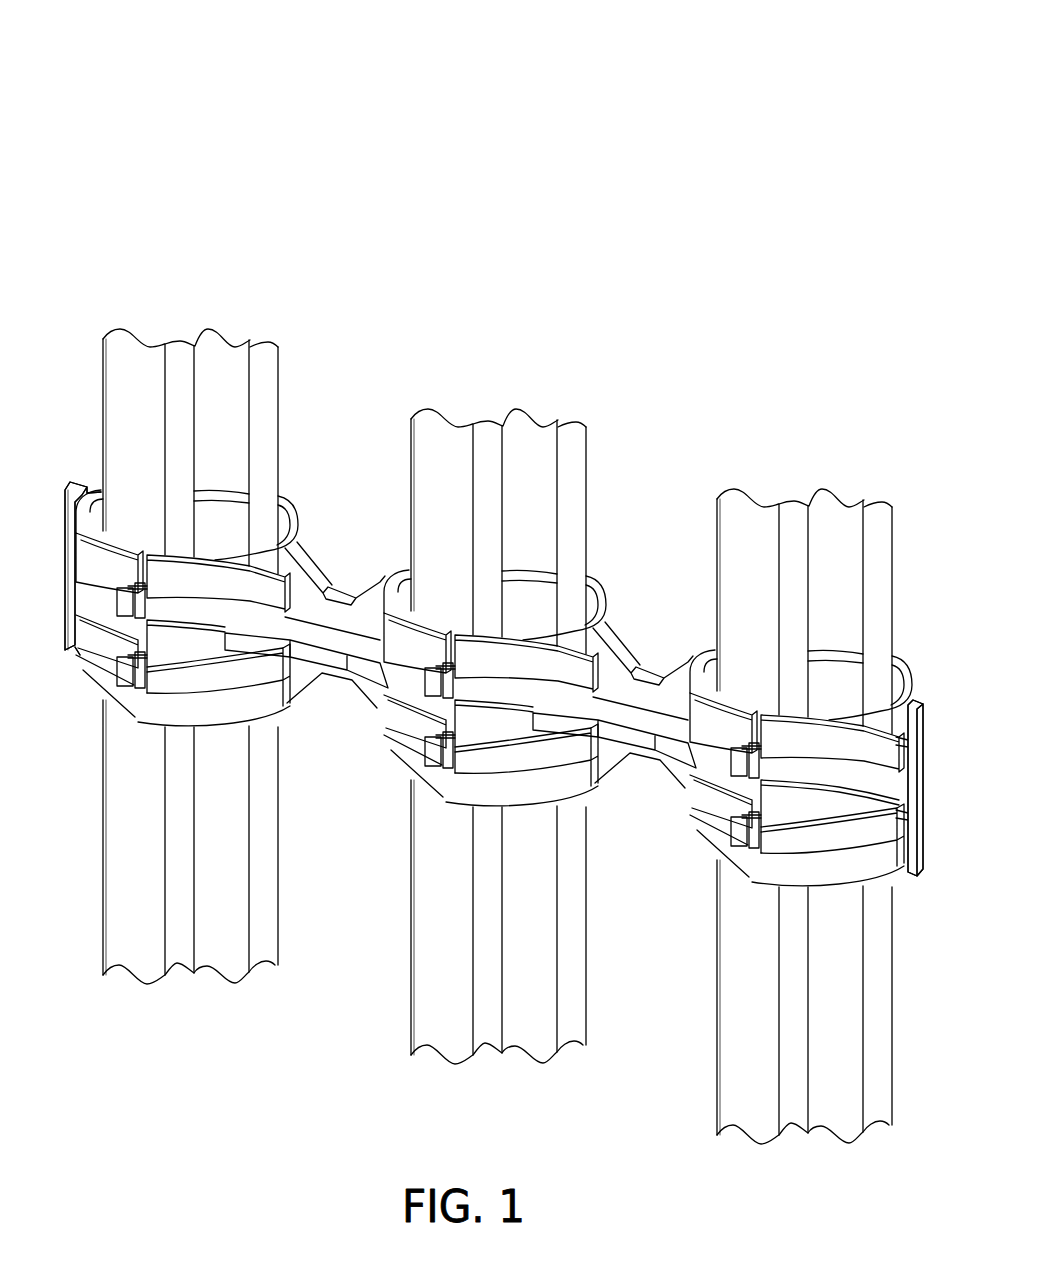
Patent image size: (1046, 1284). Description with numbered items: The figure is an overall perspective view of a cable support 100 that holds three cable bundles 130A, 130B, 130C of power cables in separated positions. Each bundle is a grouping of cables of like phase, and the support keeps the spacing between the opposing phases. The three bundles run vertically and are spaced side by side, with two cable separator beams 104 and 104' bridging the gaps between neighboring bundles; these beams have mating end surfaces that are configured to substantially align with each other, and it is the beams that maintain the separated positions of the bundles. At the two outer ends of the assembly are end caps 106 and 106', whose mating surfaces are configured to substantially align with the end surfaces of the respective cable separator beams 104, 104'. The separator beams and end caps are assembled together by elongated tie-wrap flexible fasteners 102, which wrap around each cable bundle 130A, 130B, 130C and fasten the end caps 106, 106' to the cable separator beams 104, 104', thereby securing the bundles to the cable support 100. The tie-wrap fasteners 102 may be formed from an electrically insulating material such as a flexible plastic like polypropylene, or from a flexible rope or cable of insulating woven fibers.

The cable support 100 is at (518, 186).
The elongated tie-wrap flexible fastener 102 is at (700, 972).
The cable separator beam 104 is at (614, 739).
The cable separator beam 104' is at (306, 662).
The end cap 106 is at (929, 721).
The end cap 106' is at (72, 523).
The cable bundle 130A is at (177, 366).
The cable bundle 130B is at (485, 446).
The cable bundle 130C is at (791, 526).